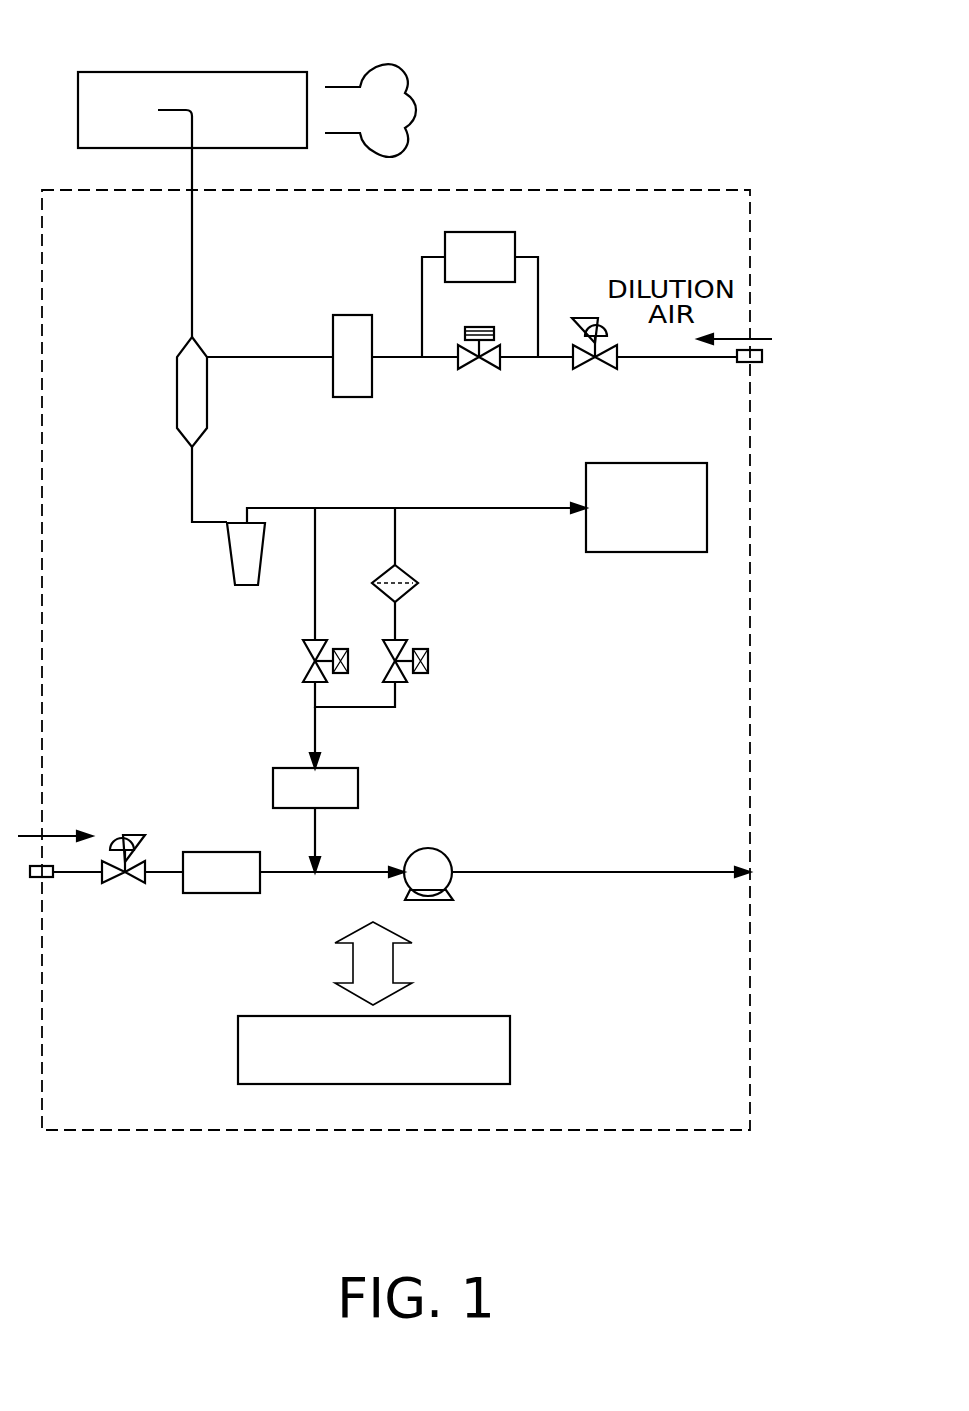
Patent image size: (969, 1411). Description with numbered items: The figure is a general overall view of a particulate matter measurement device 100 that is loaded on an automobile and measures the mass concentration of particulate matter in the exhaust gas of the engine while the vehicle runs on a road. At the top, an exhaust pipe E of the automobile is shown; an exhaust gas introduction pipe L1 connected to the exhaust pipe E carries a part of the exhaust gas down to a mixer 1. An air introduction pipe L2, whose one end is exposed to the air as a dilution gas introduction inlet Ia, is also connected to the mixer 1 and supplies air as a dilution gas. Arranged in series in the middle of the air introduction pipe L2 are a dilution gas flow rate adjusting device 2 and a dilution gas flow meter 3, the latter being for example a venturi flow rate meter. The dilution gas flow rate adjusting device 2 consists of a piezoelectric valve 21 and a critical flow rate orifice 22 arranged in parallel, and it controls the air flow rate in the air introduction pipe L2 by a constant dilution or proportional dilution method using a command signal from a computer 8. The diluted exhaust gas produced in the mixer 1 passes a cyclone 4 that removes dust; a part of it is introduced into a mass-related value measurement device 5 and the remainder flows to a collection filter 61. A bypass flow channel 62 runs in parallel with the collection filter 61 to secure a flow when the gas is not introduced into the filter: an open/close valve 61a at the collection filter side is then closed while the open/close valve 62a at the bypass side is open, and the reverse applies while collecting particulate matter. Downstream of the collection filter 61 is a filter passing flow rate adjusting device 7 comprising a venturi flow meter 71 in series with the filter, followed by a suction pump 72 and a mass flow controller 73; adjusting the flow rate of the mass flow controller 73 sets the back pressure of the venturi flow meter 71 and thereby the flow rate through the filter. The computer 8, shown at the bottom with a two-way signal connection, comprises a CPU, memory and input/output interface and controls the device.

The exhaust pipe E is at (207, 72).
The particulate matter measurement device 100 is at (612, 190).
The exhaust gas introduction pipe L1 is at (188, 248).
The air introduction pipe L2 is at (283, 355).
The mixer 1 is at (180, 345).
The dilution gas flow rate adjusting device 2 is at (490, 315).
The piezoelectric valve 21 is at (470, 366).
The critical flow rate orifice 22 is at (445, 242).
The dilution gas flow meter 3 is at (352, 314).
The dilution gas introduction inlet Ia is at (762, 358).
The cyclone 4 is at (227, 545).
The mass-related value measurement device 5 is at (583, 535).
The collection filter 61 is at (410, 575).
The open/close valve 61a is at (430, 663).
The bypass flow channel 62 is at (310, 585).
The valve 62a is at (305, 660).
The filter passing flow rate adjusting device 7 is at (384, 803).
The venturi flow meter 71 is at (273, 777).
The suction pump 72 is at (447, 850).
The mass flow controller 73 is at (210, 852).
The computer 8 is at (460, 1015).